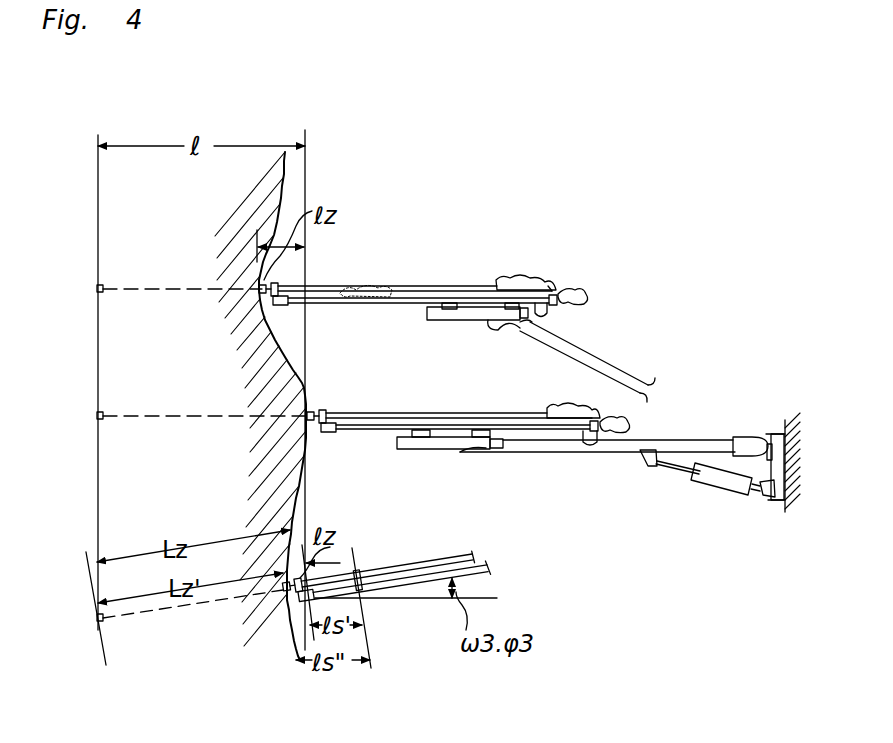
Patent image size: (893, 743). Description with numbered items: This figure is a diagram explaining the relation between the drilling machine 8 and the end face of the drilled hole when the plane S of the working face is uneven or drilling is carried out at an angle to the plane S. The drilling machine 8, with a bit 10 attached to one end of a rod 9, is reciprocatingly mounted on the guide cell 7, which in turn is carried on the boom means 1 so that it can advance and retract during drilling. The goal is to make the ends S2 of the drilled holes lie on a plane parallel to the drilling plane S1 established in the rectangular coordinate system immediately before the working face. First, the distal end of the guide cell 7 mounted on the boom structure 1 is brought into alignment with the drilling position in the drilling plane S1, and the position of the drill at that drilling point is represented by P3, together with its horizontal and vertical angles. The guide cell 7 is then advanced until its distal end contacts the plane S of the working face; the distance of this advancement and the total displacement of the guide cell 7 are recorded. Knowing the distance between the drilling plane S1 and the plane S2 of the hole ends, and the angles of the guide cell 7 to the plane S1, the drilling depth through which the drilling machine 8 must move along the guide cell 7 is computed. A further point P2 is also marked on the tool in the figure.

The boom means 1 is at (457, 316).
The guide cell 7 is at (364, 305).
The drilling machine 8 is at (541, 283).
The rod 9 is at (420, 287).
The bit 10 is at (265, 287).
The plane of the working face S is at (286, 188).
The drilling plane S1 is at (306, 208).
The plane of drilled hole ends S2 is at (98, 318).
The point on tool P2 is at (358, 567).
The drill position at the drilling point P3 is at (286, 596).